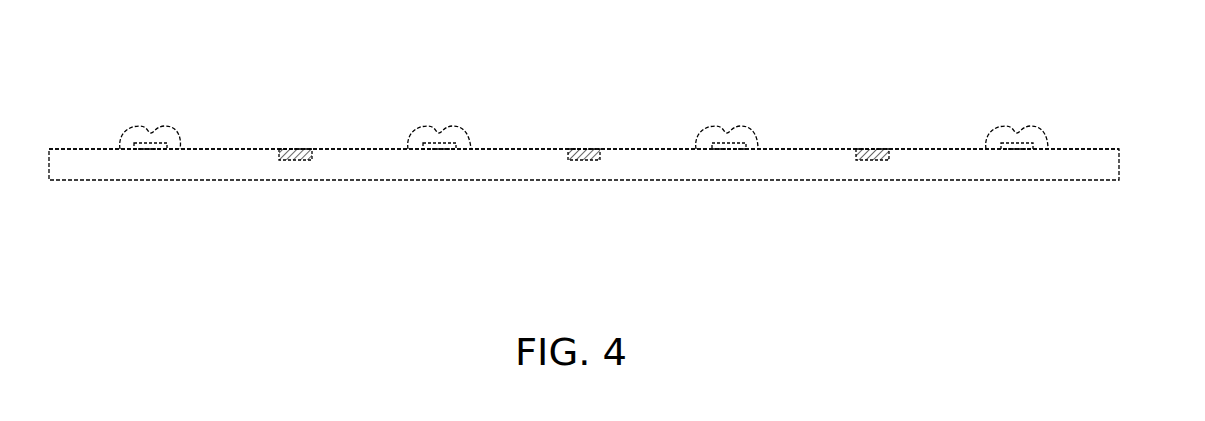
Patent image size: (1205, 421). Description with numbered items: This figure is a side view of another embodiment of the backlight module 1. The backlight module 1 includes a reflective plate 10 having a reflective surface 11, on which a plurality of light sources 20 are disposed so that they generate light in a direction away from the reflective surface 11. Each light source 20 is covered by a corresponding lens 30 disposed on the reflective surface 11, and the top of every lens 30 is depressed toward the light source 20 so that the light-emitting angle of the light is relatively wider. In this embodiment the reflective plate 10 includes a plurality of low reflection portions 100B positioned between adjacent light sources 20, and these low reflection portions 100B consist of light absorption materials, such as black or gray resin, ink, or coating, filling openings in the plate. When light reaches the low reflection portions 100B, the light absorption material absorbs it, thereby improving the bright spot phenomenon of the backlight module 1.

The backlight module 1 is at (66, 47).
The reflective plate 10 is at (1131, 163).
The reflective surface 11 is at (1098, 138).
The light source 20 is at (150, 149).
The lens 30 is at (174, 134).
The low reflection portion 100B is at (871, 149).